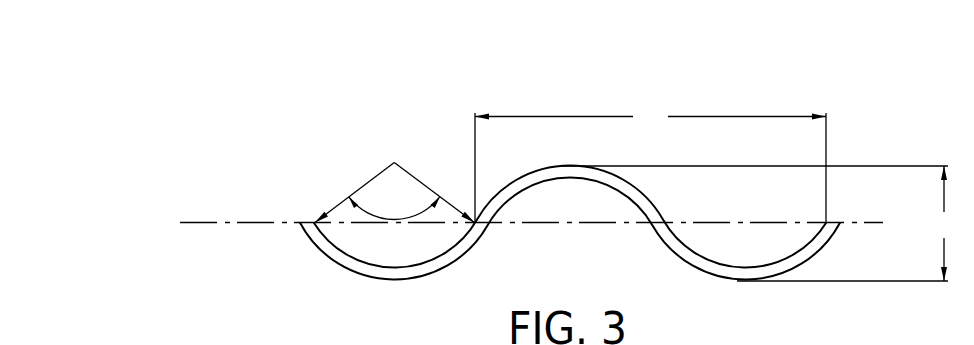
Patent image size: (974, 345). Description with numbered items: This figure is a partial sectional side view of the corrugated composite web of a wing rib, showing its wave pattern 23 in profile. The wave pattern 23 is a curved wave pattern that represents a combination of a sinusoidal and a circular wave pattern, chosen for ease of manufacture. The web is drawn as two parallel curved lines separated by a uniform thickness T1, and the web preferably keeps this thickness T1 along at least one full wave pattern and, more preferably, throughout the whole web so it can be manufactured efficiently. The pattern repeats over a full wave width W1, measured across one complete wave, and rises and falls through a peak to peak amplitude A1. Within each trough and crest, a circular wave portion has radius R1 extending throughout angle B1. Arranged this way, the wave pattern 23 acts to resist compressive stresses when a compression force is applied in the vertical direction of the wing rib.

The wave pattern 23 is at (534, 168).
The radius R1 is at (394, 176).
The angle B1 is at (394, 225).
The thickness T1 is at (300, 222).
The full wave width W1 is at (650, 161).
The peak to peak amplitude A1 is at (760, 223).